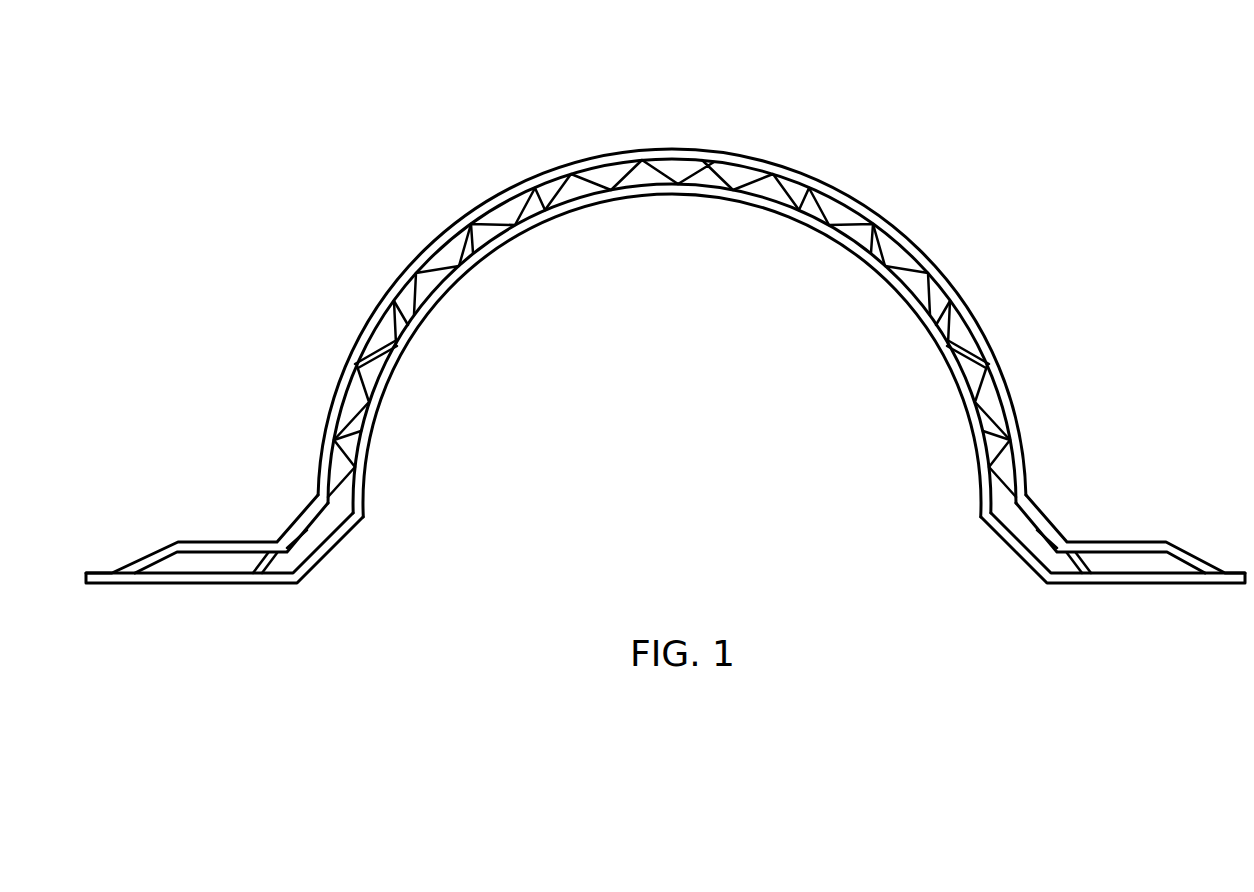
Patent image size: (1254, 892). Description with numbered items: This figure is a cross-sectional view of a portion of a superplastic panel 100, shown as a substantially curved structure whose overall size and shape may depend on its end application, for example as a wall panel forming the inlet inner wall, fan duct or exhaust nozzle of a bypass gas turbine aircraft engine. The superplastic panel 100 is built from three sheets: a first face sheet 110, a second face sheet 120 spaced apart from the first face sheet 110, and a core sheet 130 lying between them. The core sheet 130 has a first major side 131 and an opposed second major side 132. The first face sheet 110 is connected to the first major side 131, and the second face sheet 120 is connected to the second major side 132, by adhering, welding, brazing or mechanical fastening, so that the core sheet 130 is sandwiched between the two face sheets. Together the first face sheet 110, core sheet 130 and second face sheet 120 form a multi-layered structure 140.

The superplastic panel 100 is at (665, 318).
The first face sheet 110 is at (573, 212).
The second face sheet 120 is at (687, 149).
The core sheet 130 is at (530, 194).
The first major side 131 is at (742, 198).
The second major side 132 is at (826, 166).
The multi-layered structure 140 is at (423, 333).